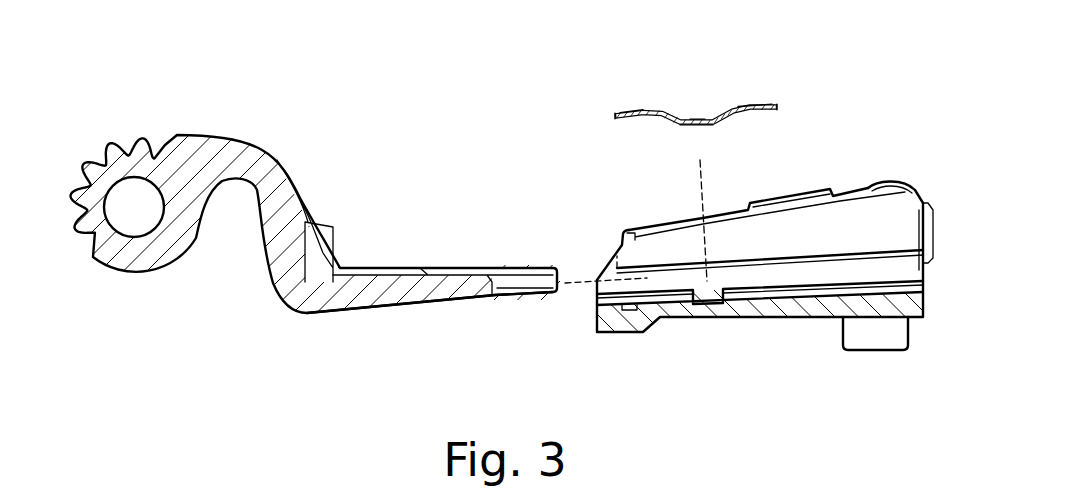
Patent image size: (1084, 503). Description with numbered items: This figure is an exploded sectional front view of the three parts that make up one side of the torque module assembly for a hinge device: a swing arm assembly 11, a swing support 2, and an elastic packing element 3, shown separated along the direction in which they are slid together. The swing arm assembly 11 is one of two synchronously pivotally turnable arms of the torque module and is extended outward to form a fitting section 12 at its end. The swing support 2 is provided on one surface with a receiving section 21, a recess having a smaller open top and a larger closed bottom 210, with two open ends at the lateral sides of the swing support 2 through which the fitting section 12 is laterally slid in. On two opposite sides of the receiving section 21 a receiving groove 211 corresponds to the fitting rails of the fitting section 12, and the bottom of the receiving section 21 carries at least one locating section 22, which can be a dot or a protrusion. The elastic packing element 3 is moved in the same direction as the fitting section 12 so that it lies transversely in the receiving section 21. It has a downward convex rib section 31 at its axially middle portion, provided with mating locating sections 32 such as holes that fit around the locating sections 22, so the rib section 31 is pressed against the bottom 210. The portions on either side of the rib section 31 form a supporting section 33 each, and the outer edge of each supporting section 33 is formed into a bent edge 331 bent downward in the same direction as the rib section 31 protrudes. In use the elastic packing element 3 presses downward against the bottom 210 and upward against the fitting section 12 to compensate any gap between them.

The swing arm assembly 11 is at (423, 222).
The fitting section 12 is at (390, 313).
The swing support 2 is at (746, 280).
The receiving section 21 is at (795, 258).
The receiving groove 211 is at (878, 265).
The bottom of the receiving section 210 is at (749, 280).
The locating section 22 is at (723, 295).
The elastic packing element 3 is at (586, 88).
The rib section 31 is at (675, 124).
The mating locating section 32 is at (697, 119).
The supporting section 33 is at (757, 104).
The bent edge 331 is at (780, 107).